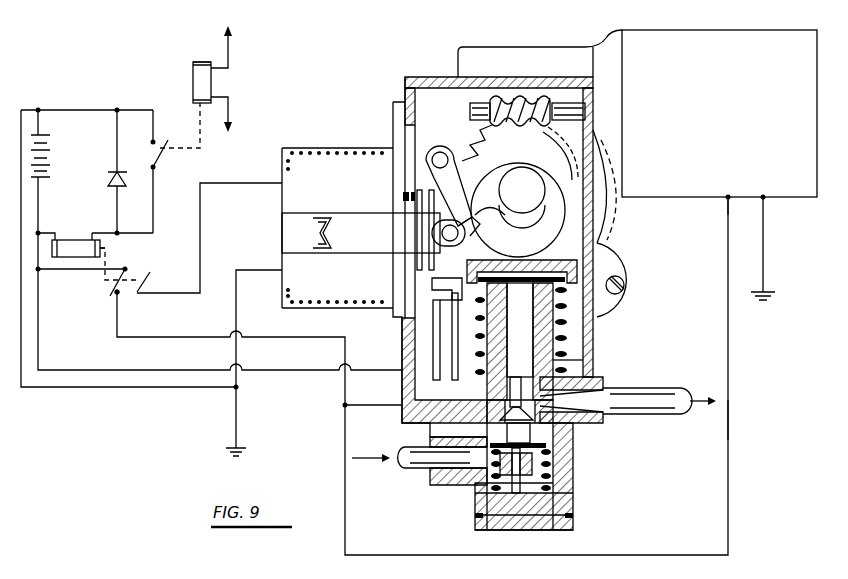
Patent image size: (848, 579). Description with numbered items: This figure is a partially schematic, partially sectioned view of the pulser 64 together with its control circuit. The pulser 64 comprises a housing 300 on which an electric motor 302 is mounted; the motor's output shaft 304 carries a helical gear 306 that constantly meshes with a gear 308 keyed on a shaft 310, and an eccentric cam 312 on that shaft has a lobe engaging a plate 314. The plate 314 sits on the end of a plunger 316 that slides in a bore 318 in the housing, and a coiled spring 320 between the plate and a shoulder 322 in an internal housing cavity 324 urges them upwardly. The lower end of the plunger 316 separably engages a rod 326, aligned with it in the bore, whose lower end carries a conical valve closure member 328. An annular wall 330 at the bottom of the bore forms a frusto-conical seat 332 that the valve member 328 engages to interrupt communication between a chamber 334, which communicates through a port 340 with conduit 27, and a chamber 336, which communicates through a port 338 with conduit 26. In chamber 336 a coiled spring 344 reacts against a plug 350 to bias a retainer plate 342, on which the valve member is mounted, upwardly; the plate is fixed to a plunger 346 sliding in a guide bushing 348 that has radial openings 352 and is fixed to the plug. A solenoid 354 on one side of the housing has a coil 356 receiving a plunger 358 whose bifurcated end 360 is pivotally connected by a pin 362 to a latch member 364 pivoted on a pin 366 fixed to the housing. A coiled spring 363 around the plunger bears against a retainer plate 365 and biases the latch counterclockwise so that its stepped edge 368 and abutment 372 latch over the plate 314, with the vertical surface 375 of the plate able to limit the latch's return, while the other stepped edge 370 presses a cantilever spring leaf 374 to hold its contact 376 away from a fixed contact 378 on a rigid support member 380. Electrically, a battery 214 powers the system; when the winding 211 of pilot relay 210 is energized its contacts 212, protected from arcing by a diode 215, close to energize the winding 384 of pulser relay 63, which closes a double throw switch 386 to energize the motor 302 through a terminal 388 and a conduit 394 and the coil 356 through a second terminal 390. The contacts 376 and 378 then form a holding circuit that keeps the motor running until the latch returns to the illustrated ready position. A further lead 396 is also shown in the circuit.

The conduit 26 is at (400, 464).
The conduit 27 is at (681, 390).
The pulser relay 63 is at (106, 248).
The pulser 64 is at (582, 466).
The pilot relay 210 is at (216, 84).
The winding 211 is at (200, 60).
The contacts 212 is at (161, 151).
The battery 214 is at (42, 136).
The diode 215 is at (109, 176).
The housing 300 is at (612, 254).
The electric motor 302 is at (713, 37).
The output shaft 304 is at (579, 103).
The helical gear 306 is at (522, 93).
The gear 308 is at (478, 130).
The shaft 310 is at (519, 174).
The eccentric cam 312 is at (553, 186).
The plate 314 is at (546, 266).
The plunger 316 is at (537, 324).
The bore 318 is at (528, 346).
The coiled spring 320 is at (615, 275).
The shoulder 322 is at (491, 392).
The internal housing cavity 324 is at (575, 304).
The rod 326 is at (592, 370).
The conical valve closure member 328 is at (546, 434).
The annular wall 330 is at (446, 430).
The frusto-conical seat 332 is at (507, 409).
The chamber 334 is at (592, 383).
The chamber 336 is at (550, 470).
The port 338 is at (466, 486).
The port 340 is at (572, 402).
The retainer plate 342 is at (549, 446).
The coiled spring 344 is at (533, 478).
The plunger 346 is at (514, 512).
The guide bushing 348 is at (506, 510).
The plug 350 is at (531, 515).
The radial openings 352 is at (549, 516).
The solenoid 354 is at (327, 150).
The coil 356 is at (306, 311).
The plunger 358 is at (346, 250).
The bifurcated end 360 is at (432, 231).
The pin 362 is at (442, 236).
The coiled spring 363 is at (416, 192).
The latch member 364 is at (456, 171).
The retainer plate 365 is at (508, 217).
The pin 366 is at (449, 160).
The stepped edge 368 is at (483, 236).
The stepped edge 370 is at (432, 287).
The abutment 372 is at (500, 232).
The spring leaf 374 is at (455, 346).
The vertical surface 375 is at (477, 336).
The contact 376 is at (452, 336).
The fixed contact 378 is at (433, 331).
The rigid support member 380 is at (427, 385).
The winding 384 is at (82, 240).
The double throw switch 386 is at (140, 273).
The terminal 388 is at (118, 295).
The second terminal 390 is at (143, 291).
The conduit 394 is at (730, 415).
The lead 396 is at (728, 196).